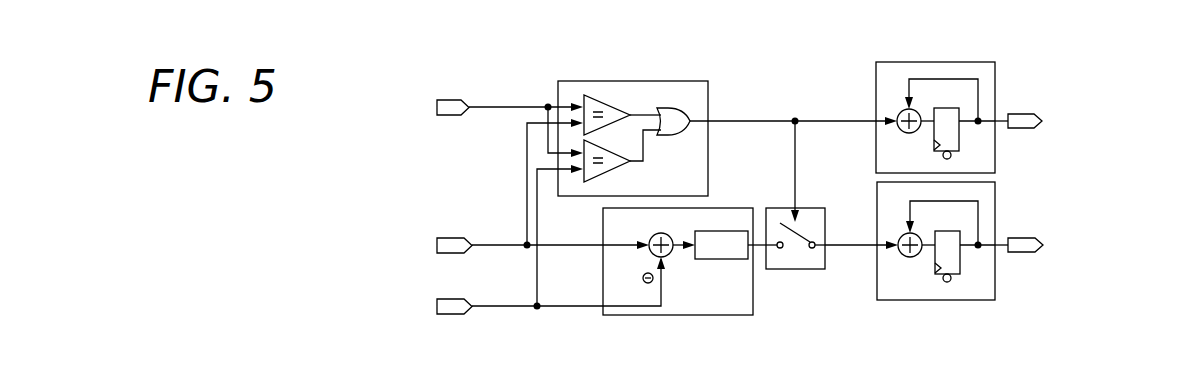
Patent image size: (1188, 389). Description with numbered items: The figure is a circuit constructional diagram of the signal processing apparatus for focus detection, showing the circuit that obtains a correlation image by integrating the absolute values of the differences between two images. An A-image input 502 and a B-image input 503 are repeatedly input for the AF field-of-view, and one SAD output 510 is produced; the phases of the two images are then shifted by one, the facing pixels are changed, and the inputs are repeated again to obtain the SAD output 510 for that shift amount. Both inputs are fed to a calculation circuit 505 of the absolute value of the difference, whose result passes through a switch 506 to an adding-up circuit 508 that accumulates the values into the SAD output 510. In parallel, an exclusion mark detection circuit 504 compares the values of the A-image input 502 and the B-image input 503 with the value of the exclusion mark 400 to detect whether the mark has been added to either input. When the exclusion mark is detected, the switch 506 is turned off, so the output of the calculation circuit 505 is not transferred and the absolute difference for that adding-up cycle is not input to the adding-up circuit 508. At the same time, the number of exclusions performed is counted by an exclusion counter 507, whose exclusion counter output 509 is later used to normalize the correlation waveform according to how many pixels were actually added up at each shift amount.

The exclusion mark 400 is at (447, 117).
The A-image input 502 is at (442, 255).
The B-image input 503 is at (442, 315).
The exclusion mark detection circuit 504 is at (655, 82).
The calculation circuit of the absolute value of the difference 505 is at (703, 316).
The switch 506 is at (800, 270).
The exclusion counter 507 is at (963, 62).
The adding-up circuit 508 is at (945, 301).
The exclusion counter output 509 is at (1071, 156).
The SAD output 510 is at (1071, 281).